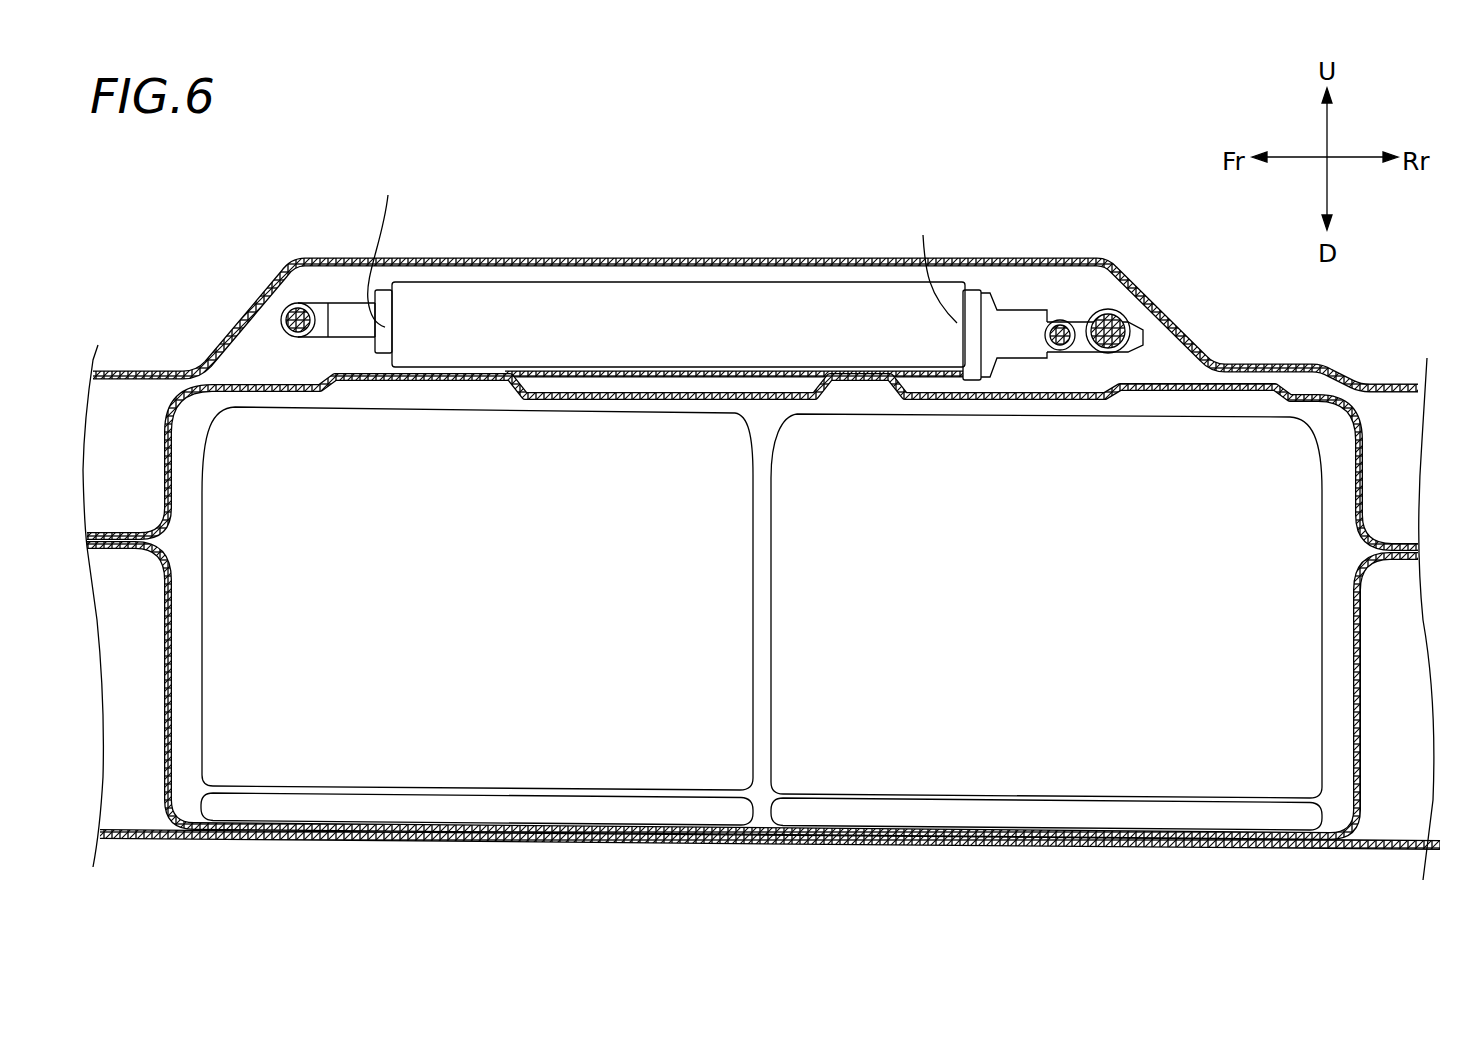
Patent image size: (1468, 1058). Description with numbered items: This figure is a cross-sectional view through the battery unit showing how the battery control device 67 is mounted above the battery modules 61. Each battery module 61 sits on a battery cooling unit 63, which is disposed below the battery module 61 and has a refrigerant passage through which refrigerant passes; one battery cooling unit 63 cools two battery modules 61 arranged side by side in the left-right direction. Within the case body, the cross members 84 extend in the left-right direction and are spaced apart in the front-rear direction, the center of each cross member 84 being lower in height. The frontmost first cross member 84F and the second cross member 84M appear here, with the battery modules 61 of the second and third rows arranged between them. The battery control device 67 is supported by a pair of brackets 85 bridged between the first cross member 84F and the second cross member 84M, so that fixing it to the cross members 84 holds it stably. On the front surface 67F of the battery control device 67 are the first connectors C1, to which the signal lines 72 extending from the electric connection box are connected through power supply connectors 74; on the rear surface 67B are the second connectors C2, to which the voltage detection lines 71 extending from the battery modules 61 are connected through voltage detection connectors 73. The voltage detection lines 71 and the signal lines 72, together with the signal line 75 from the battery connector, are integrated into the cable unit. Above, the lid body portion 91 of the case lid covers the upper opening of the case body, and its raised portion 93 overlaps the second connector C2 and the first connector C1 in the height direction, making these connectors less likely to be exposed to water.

The battery module 61 is at (672, 680).
The battery cooling unit 63 is at (520, 808).
The battery control device 67 is at (640, 323).
The front surface 67F is at (385, 323).
The rear surface 67B is at (977, 325).
The voltage detection line 71 is at (1110, 322).
The signal line 72 is at (257, 279).
The voltage detection connector 73 is at (1000, 330).
The power supply connector 74 is at (352, 317).
The signal line 75 is at (294, 313).
The cross member 84 is at (771, 667).
The first cross member 84F is at (163, 640).
The second cross member 84M is at (1360, 650).
The bracket 85 is at (223, 397).
The lid body portion 91 is at (1388, 382).
The raised portion 93 is at (733, 260).
The first connector C1 is at (383, 248).
The second connector C2 is at (929, 265).